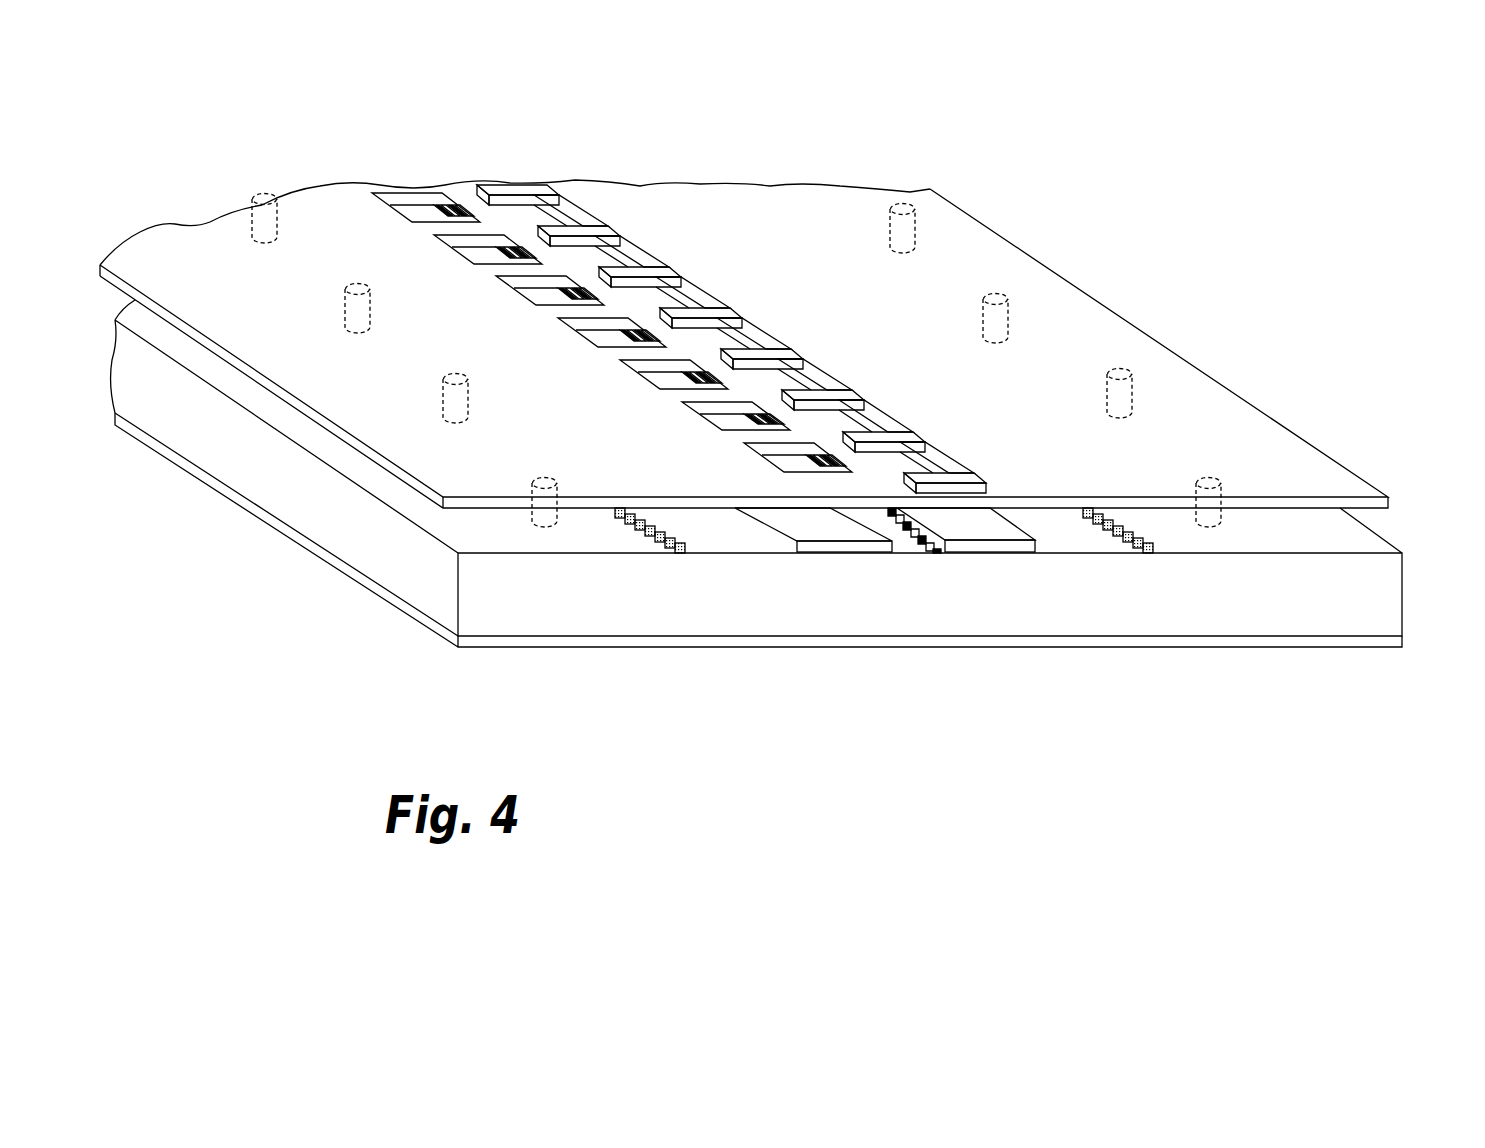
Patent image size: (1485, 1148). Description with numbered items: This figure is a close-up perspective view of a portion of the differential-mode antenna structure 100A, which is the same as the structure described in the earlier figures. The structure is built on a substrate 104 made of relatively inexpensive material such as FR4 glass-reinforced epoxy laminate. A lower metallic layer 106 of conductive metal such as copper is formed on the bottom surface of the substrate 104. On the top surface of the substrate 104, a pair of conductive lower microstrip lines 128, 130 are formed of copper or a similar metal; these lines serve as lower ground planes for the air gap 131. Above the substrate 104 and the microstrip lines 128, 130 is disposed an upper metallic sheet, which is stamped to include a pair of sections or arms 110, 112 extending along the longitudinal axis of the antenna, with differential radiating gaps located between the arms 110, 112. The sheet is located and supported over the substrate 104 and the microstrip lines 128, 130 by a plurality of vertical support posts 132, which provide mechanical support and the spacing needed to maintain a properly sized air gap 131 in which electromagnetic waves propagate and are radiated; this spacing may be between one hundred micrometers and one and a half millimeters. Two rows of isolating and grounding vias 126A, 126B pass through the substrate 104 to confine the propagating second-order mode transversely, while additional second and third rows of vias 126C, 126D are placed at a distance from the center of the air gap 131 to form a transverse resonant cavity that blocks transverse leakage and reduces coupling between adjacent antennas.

The differential-mode antenna structure 100A is at (1122, 243).
The substrate 104 is at (1402, 580).
The lower metallic layer 106 is at (1382, 645).
The arm of upper metallic sheet 110 is at (295, 400).
The arm of upper metallic sheet 112 is at (1322, 446).
The row of isolating and grounding vias 126A is at (835, 522).
The row of isolating and grounding vias 126B is at (960, 524).
The second row of vias 126C is at (620, 522).
The third row of vias 126D is at (1147, 565).
The lower microstrip line 128 is at (975, 554).
The lower microstrip line 130 is at (845, 554).
The air gap 131 is at (922, 526).
The vertical support posts 132 is at (277, 214).